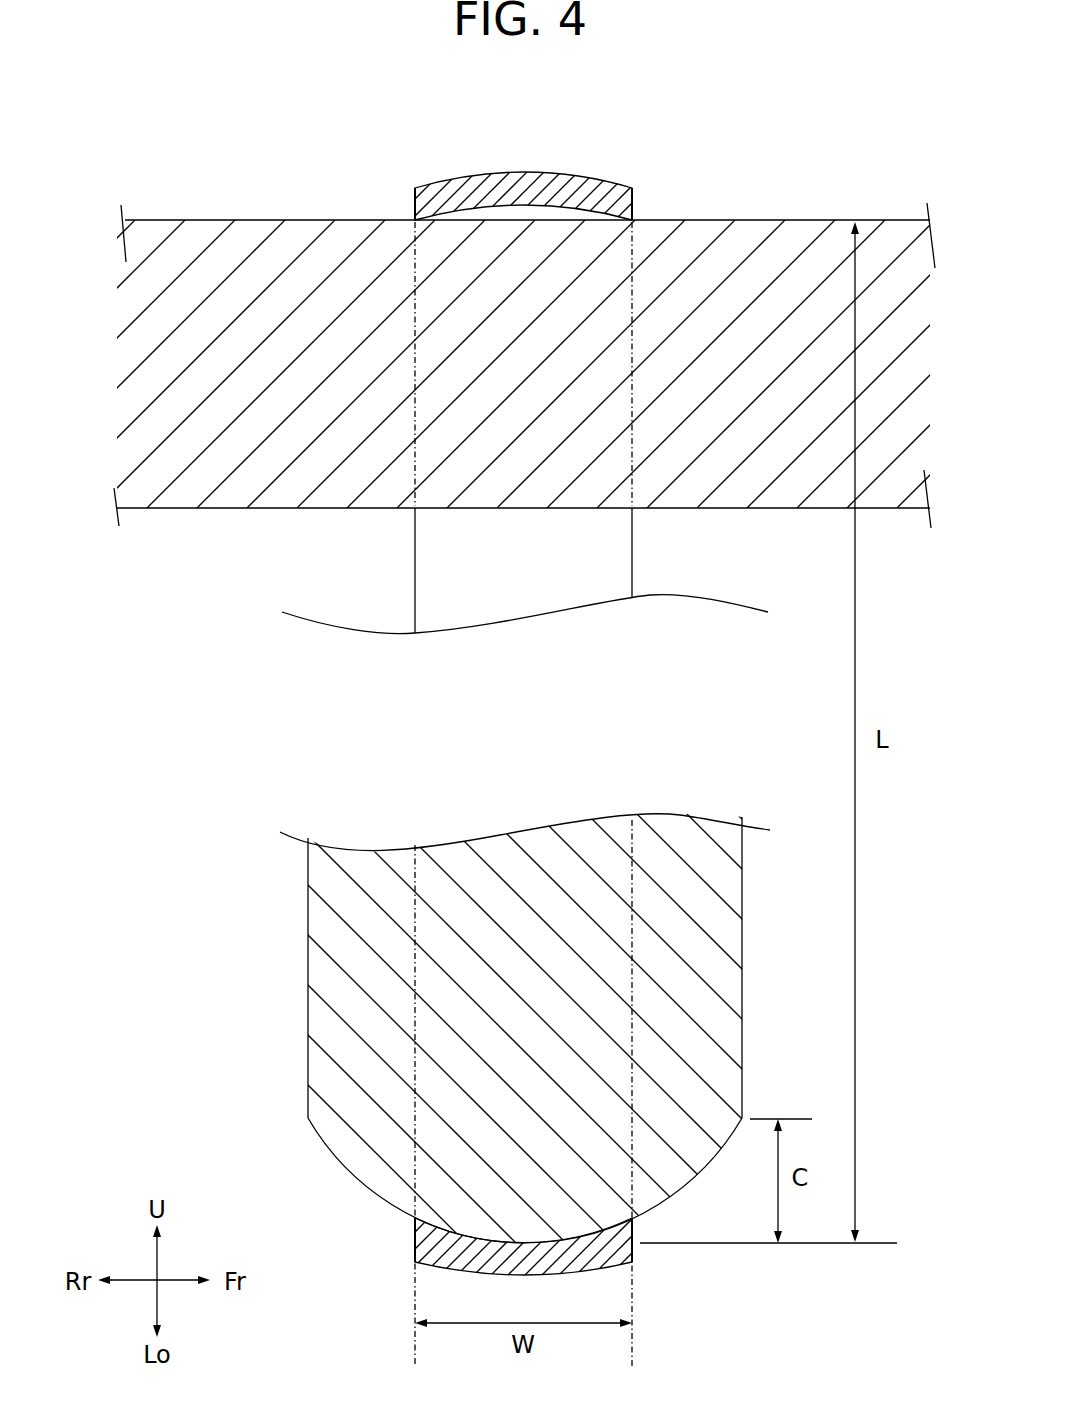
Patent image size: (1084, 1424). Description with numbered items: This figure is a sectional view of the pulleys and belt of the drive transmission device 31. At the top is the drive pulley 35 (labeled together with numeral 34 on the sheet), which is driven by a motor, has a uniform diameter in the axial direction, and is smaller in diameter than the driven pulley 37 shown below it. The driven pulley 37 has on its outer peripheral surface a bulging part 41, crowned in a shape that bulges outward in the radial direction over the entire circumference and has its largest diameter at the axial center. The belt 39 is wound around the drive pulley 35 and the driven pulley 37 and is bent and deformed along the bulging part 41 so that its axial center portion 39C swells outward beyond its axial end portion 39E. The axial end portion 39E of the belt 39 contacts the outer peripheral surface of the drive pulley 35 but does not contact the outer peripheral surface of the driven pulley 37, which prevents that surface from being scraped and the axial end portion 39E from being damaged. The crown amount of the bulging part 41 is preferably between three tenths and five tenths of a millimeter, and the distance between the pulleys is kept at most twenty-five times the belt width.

The drive transmission device 31 is at (542, 726).
The substrate 34 is at (542, 335).
The drive pulley 35 is at (752, 219).
The driven pulley 37 is at (542, 1030).
The belt 39 is at (413, 540).
The axial center portion 39C is at (532, 200).
The axial end portion 39E is at (415, 219).
The bulging part 41 is at (335, 1155).